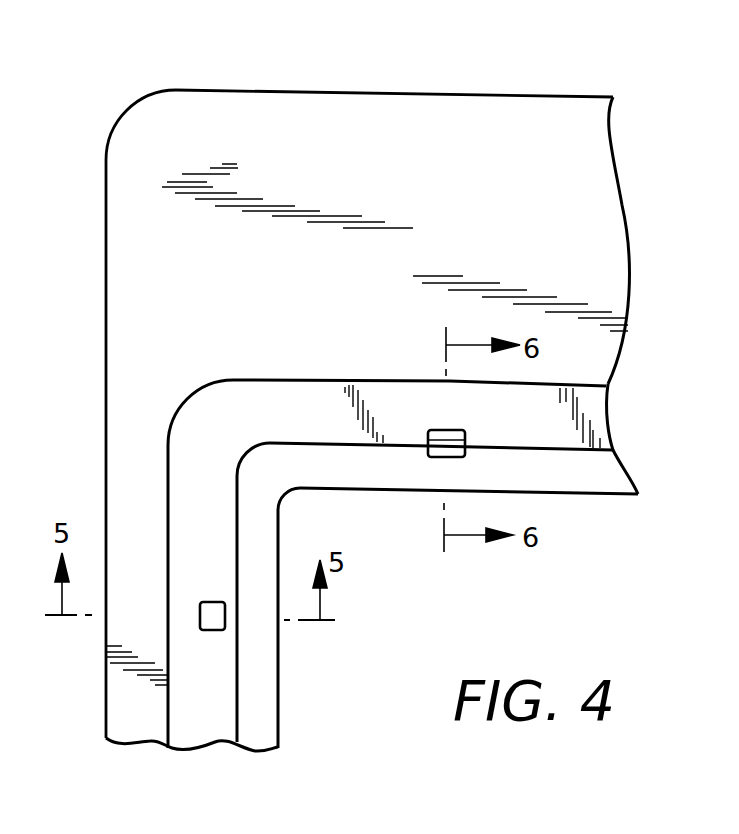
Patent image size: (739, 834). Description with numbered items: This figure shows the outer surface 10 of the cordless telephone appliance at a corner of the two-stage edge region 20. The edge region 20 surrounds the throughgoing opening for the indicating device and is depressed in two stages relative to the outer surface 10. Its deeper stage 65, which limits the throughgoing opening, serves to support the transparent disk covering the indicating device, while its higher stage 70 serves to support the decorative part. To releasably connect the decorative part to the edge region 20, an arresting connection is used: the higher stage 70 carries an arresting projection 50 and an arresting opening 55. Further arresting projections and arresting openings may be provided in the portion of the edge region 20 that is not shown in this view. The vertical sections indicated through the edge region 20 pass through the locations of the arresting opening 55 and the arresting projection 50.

The outer surface 10 is at (527, 113).
The edge region 20 is at (588, 425).
The arresting projection 50 is at (436, 458).
The arresting opening 55 is at (216, 621).
The deeper stage 65 is at (332, 474).
The higher stage 70 is at (295, 390).